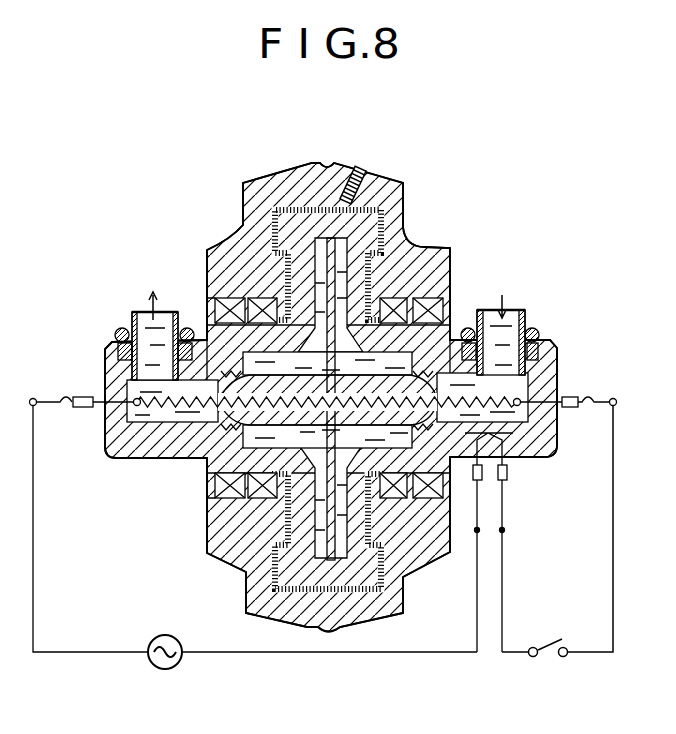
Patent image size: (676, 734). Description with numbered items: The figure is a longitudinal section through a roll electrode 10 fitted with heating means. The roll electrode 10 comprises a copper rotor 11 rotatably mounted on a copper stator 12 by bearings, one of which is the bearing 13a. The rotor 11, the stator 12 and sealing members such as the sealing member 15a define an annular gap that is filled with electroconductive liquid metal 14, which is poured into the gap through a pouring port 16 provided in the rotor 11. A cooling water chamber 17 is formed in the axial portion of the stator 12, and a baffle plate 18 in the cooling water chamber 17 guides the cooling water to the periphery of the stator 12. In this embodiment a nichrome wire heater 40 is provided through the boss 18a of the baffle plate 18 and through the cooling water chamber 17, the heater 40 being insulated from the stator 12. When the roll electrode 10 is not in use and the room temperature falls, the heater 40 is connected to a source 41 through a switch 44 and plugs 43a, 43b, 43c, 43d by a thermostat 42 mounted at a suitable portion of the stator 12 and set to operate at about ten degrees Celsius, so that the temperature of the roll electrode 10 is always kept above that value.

The roll electrode 10 is at (547, 167).
The rotor 11 is at (393, 203).
The stator 12 is at (540, 373).
The bearing 13a is at (427, 307).
The liquid metal 14 is at (410, 258).
The sealing member 15a is at (397, 303).
The pouring port 16 is at (363, 172).
The cooling water chamber 17 is at (507, 320).
The baffle plate 18 is at (328, 260).
The boss 18a is at (366, 406).
The nichrome wire heater 40 is at (160, 408).
The source 41 is at (160, 637).
The thermostat 42 is at (520, 440).
The plug 43a is at (67, 393).
The plug 43b is at (476, 483).
The plug 43c is at (497, 483).
The plug 43d is at (593, 397).
The switch 44 is at (550, 640).